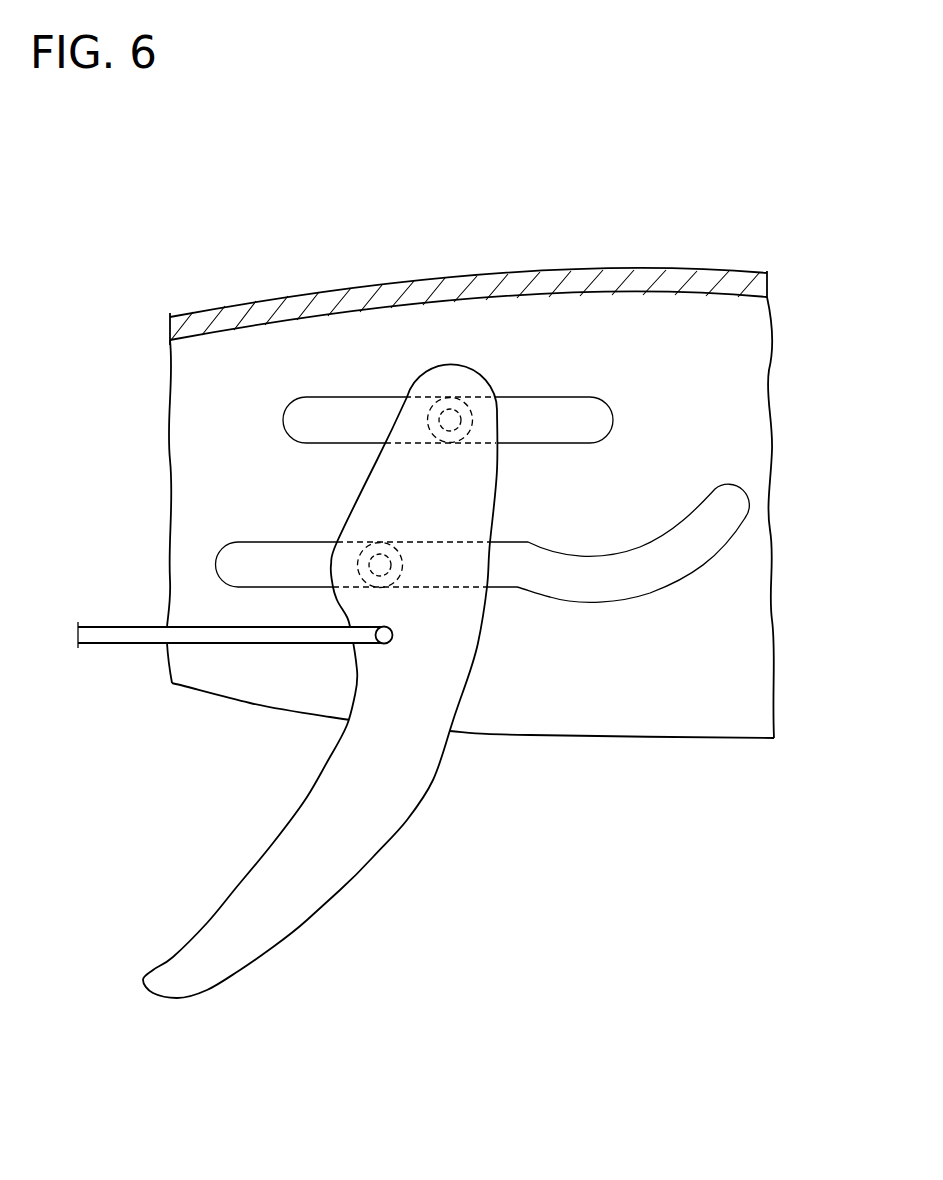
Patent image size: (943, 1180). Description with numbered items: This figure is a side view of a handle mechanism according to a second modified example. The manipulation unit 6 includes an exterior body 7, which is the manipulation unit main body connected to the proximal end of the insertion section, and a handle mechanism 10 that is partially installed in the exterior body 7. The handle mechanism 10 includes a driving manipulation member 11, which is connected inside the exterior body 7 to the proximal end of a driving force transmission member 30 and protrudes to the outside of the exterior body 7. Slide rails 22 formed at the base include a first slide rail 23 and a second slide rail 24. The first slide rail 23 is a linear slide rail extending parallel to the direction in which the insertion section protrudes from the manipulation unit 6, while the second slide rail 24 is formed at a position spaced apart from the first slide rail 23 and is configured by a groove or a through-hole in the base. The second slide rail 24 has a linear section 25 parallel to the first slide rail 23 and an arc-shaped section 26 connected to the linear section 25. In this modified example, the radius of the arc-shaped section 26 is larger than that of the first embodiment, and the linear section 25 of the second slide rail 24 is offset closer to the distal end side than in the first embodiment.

The manipulation unit 6 is at (628, 223).
The exterior body 7 is at (535, 273).
The handle mechanism 10 is at (660, 353).
The driving manipulation member 11 is at (300, 900).
The slide rails 22 is at (483, 656).
The first slide rail 23 is at (587, 418).
The second slide rail 24 is at (400, 706).
The linear section 25 is at (607, 583).
The arc-shaped section 26 is at (290, 567).
The driving force transmission member 30 is at (257, 644).